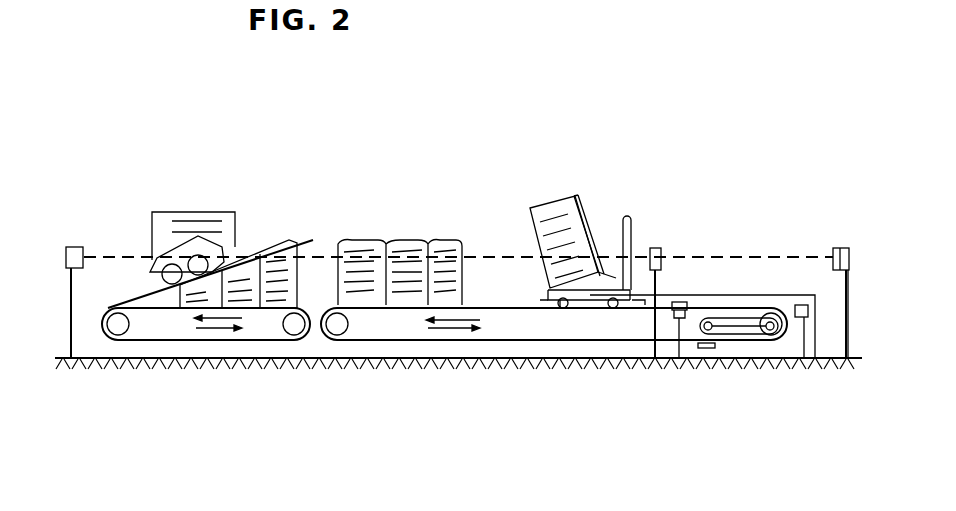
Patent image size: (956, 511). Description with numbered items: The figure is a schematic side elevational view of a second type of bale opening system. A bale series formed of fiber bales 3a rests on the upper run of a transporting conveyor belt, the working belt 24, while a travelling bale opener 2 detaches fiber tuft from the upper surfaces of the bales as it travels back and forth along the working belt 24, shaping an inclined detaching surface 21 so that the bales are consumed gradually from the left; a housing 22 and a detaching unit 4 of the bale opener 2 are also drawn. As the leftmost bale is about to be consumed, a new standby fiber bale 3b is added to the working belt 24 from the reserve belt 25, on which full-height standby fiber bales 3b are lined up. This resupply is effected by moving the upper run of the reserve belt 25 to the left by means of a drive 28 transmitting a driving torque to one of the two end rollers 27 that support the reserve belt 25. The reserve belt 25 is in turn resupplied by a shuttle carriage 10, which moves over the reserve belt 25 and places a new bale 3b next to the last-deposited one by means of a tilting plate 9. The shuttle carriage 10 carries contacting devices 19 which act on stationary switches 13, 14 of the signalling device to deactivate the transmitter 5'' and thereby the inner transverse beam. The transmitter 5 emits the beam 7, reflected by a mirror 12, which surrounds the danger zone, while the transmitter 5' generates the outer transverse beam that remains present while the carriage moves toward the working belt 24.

The travelling bale opener 2 is at (205, 207).
The fiber bales 3a is at (313, 240).
The standby fiber bale 3b is at (402, 247).
The cutting device 4 is at (232, 243).
The transmitter 5 is at (862, 266).
The transmitter 5' is at (837, 266).
The transmitter 5'' is at (668, 266).
The beam 7 is at (776, 257).
The tilting plate 9 is at (577, 196).
The shuttle carriage 10 is at (615, 278).
The mirror 12 is at (75, 247).
The switch 13 is at (806, 318).
The switch 14 is at (679, 322).
The contacting device 19 is at (545, 302).
The inclined detaching surface 21 is at (283, 247).
The press housing 22 is at (152, 227).
The working belt 24 is at (238, 340).
The reserve belt 25 is at (400, 340).
The end rollers 27 is at (114, 330).
The drive 28 is at (732, 335).